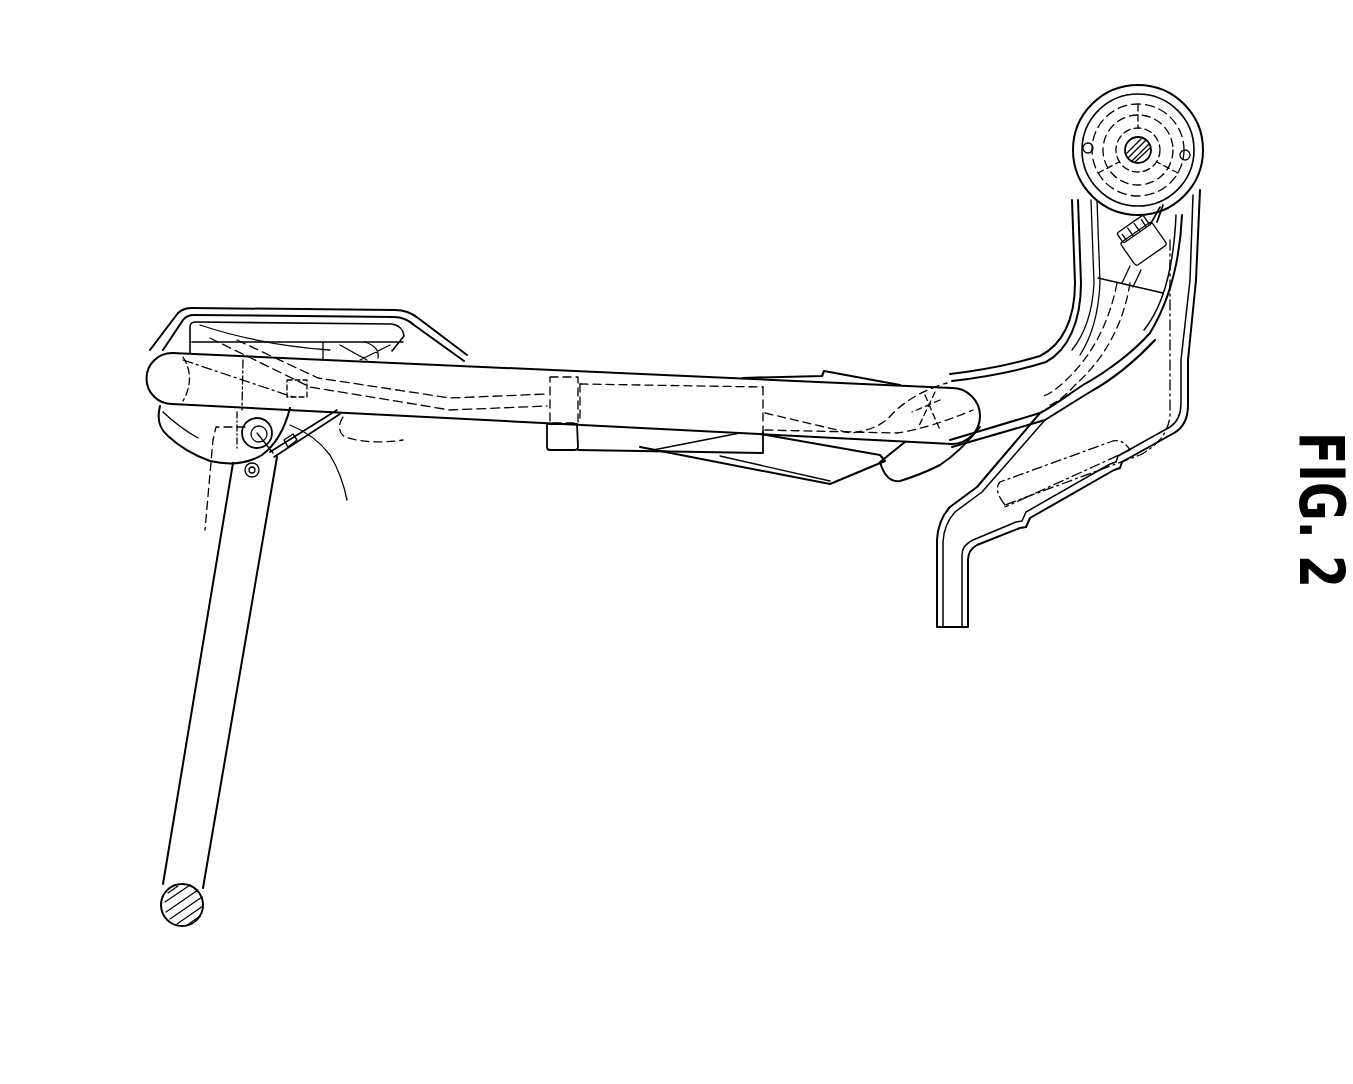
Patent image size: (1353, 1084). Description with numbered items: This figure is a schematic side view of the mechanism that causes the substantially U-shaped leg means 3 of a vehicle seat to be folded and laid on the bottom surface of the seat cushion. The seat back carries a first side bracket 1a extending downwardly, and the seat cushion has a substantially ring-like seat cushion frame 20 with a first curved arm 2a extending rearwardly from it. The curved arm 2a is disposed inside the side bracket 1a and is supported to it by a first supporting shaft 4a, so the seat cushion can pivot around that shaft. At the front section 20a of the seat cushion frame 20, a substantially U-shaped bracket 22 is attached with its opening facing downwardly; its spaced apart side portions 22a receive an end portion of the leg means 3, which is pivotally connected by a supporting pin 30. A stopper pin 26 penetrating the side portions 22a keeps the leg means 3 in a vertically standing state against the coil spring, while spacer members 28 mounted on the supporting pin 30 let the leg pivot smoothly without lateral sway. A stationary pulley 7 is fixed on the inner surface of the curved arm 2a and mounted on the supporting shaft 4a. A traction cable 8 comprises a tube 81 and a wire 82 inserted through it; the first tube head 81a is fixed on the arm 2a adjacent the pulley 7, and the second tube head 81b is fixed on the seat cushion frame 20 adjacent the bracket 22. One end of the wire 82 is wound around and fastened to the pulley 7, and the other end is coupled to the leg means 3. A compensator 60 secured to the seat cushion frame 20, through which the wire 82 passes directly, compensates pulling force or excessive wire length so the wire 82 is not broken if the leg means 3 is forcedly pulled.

The first side bracket 1a is at (1189, 352).
The first curved arm 2a is at (1040, 397).
The leg means 3 is at (192, 685).
The first supporting shaft 4a is at (1140, 145).
The stationary pulley 7 is at (1190, 184).
The traction cable 8 is at (352, 327).
The seat cushion frame 20 is at (636, 373).
The front section 20a is at (157, 382).
The bracket 22 is at (198, 458).
The side portion 22a is at (193, 436).
The stopper pin 26 is at (392, 440).
The spacer member 28 is at (205, 518).
The supporting pin 30 is at (277, 457).
The compensator 60 is at (610, 450).
The tube 81 is at (245, 335).
The first tube head 81a is at (1133, 222).
The second tube head 81b is at (433, 352).
The wire 82 is at (307, 427).